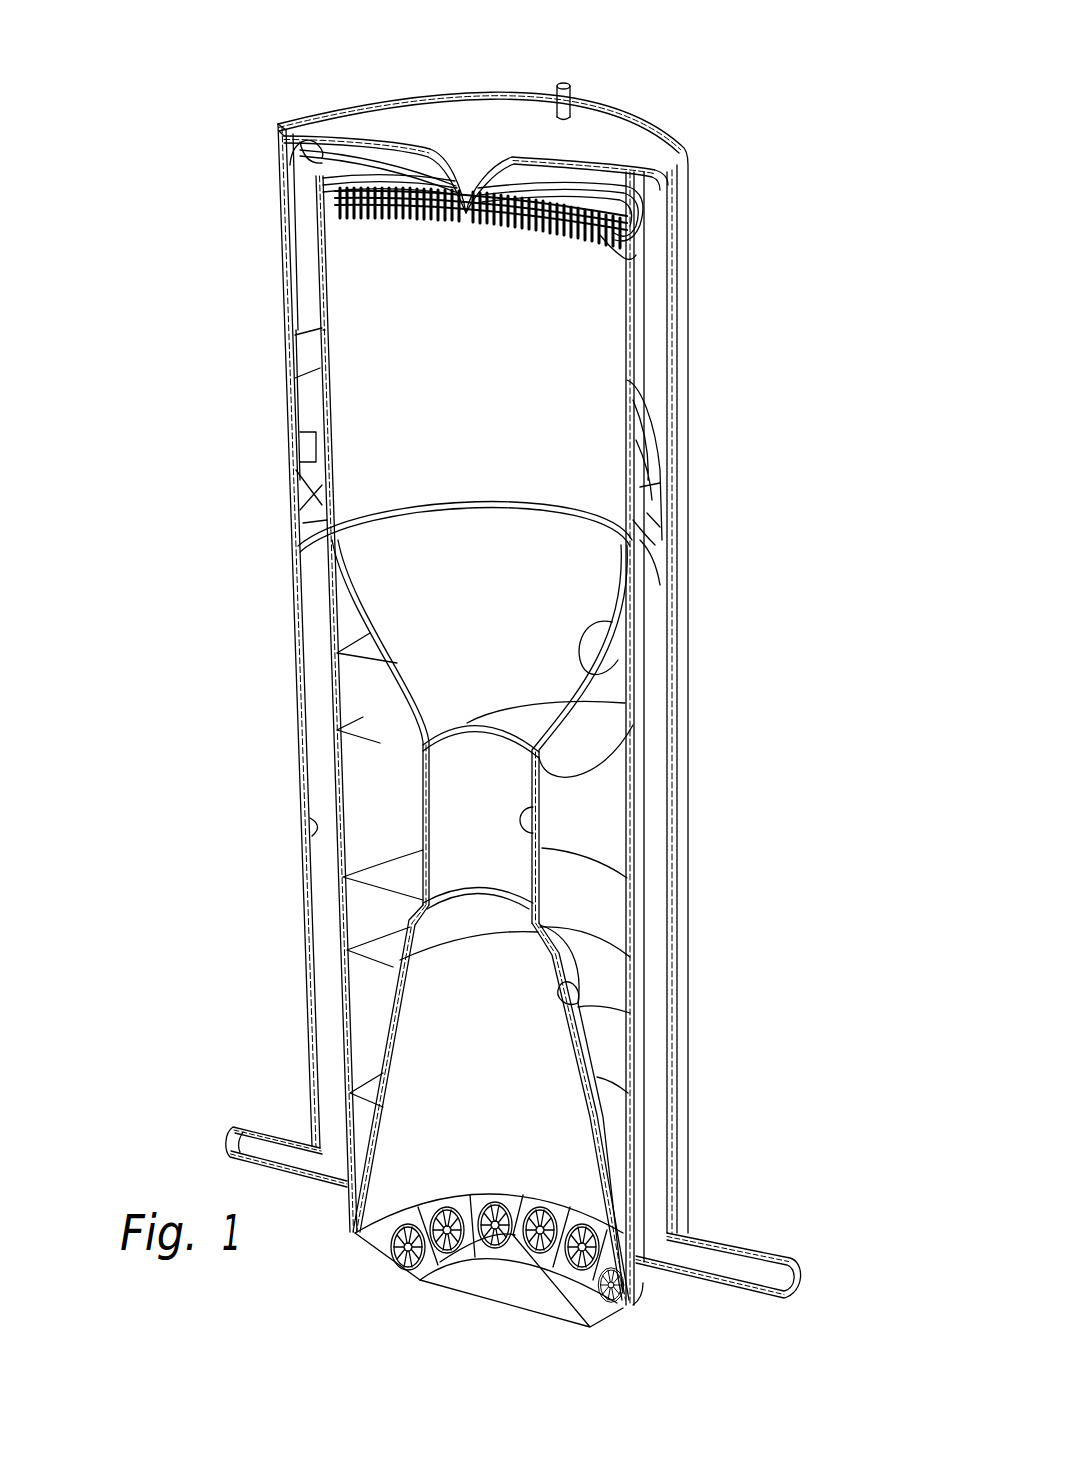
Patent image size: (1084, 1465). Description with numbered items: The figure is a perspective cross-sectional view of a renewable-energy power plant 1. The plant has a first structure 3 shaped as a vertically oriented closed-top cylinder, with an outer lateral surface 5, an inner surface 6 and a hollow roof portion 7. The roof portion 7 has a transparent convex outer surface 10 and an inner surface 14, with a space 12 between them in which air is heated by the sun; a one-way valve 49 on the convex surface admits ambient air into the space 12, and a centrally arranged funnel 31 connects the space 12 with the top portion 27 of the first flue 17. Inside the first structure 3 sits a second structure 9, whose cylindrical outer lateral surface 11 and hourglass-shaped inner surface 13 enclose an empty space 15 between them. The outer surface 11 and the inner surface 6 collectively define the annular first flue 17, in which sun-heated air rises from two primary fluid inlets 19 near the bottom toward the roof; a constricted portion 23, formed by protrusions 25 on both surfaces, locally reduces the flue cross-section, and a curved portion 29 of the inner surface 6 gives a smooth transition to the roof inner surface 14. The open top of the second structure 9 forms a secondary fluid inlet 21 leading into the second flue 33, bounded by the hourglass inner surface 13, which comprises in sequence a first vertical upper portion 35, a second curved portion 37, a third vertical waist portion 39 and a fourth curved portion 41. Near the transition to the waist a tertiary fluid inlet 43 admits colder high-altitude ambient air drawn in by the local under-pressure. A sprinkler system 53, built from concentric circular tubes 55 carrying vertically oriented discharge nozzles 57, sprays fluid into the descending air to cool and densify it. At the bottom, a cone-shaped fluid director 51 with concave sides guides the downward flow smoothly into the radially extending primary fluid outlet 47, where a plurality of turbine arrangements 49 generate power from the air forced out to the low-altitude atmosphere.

The renewable-energy power plant 1 is at (166, 598).
The first structure 3 is at (300, 676).
The outer lateral surface 5 is at (300, 780).
The inner surface 6 is at (308, 820).
The roof portion 7 is at (520, 140).
The second structure 9 is at (330, 620).
The convex outer surface 10 is at (505, 107).
The outer lateral surface 11 is at (323, 328).
The space 12 is at (381, 122).
The hourglass shaped inner surface 13 is at (602, 635).
The inner surface 14 is at (350, 152).
The empty space 15 is at (600, 833).
The first flue 17 is at (316, 740).
The primary fluid inlets 19 is at (323, 1160).
The secondary fluid inlet 21 is at (592, 195).
The constricted portion 23 is at (307, 442).
The protrusions 25 is at (293, 495).
The top portion 27 is at (300, 137).
The curved portion 29 is at (657, 185).
The funnel 31 is at (470, 170).
The second flue 33 is at (527, 323).
The first vertical upper portion 35 is at (625, 380).
The second curved portion 37 is at (625, 608).
The third vertical waist portion 39 is at (545, 832).
The fourth curved portion 41 is at (580, 1003).
The tertiary fluid inlet 43 is at (625, 703).
The primary fluid outlet 47 is at (413, 1273).
The one-way valve / turbine arrangements 49 is at (568, 85).
The fluid director 51 is at (553, 1287).
The sprinkler system 53 is at (622, 257).
The concentric circular tubes 55 is at (620, 190).
The discharge nozzles 57 is at (567, 242).